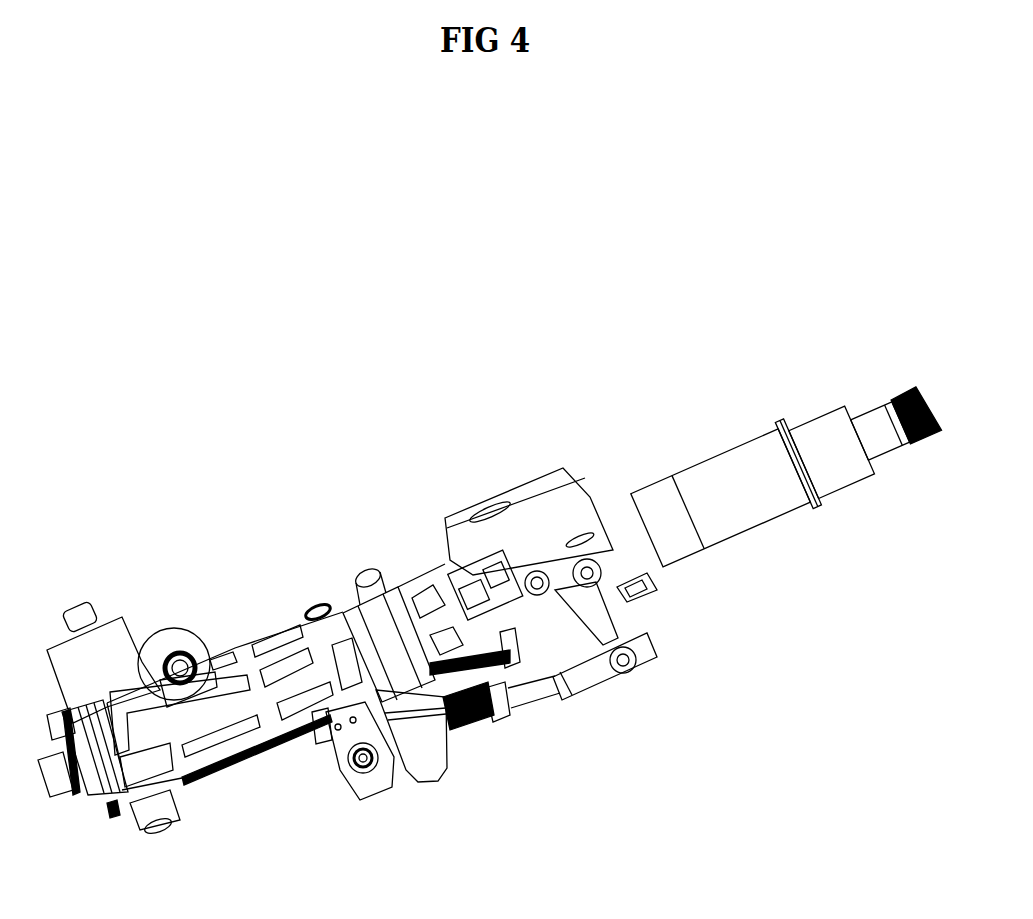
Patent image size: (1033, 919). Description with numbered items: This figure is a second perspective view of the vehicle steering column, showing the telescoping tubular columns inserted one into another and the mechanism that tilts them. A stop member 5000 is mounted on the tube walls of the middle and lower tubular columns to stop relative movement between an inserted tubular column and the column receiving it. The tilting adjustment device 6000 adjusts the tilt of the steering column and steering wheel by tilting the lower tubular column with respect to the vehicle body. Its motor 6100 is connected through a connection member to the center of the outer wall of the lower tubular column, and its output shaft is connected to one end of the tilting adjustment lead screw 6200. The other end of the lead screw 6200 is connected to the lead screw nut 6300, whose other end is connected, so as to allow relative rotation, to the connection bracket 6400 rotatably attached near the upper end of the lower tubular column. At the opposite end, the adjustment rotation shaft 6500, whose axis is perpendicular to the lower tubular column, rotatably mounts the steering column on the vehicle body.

The stop member 5000 is at (314, 605).
The tilting adjustment device 6000 is at (498, 737).
The motor 6100 is at (387, 613).
The tilting adjustment lead screw 6200 is at (460, 728).
The lead screw nut 6300 is at (587, 668).
The connection bracket 6400 is at (615, 617).
The adjustment rotation shaft 6500 is at (185, 647).